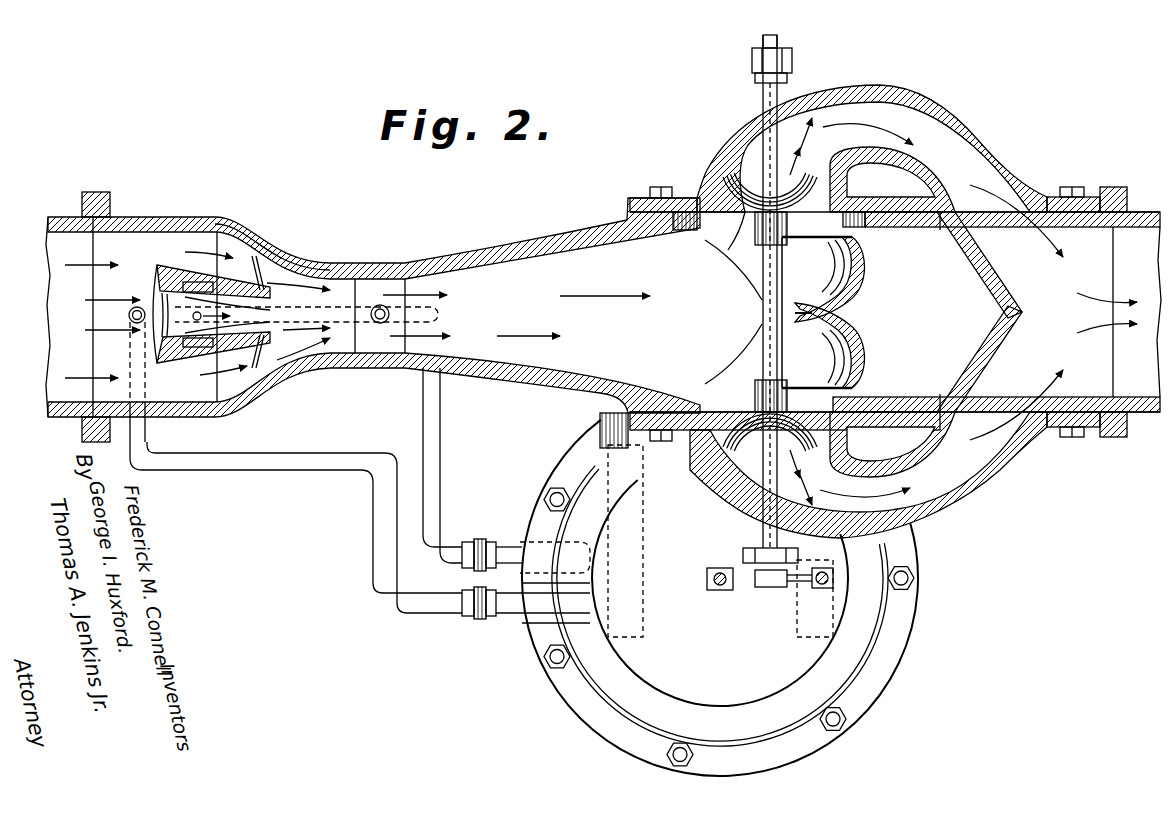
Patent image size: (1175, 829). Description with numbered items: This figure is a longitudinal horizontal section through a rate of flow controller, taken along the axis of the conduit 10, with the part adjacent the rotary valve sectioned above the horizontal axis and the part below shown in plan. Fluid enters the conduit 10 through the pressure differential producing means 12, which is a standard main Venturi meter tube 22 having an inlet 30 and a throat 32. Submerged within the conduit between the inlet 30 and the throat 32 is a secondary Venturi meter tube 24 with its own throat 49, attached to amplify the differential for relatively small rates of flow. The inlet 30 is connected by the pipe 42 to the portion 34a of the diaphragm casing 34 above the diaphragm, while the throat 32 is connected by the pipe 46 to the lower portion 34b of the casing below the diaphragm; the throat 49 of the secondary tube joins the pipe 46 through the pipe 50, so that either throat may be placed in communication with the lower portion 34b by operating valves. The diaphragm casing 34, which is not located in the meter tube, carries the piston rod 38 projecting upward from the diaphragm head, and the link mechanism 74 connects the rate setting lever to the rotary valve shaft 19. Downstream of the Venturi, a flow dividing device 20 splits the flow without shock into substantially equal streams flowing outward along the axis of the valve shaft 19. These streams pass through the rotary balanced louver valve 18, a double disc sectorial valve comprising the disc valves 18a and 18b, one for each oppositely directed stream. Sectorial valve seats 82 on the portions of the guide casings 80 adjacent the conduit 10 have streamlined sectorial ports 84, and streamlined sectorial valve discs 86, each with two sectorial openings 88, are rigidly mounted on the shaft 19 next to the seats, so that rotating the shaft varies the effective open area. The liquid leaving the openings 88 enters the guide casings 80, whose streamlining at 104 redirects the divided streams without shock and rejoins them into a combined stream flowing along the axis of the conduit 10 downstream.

The conduit 10 is at (66, 230).
The pressure differential producing means 12 is at (248, 228).
The main Venturi meter tube 22 is at (300, 266).
The secondary Venturi meter tube 24 is at (176, 264).
The inlet 30 is at (84, 412).
The throat 32 is at (372, 342).
The throat 49 is at (193, 316).
The pipe 50 is at (365, 270).
The pipe 42 is at (226, 466).
The pipe 46 is at (440, 484).
The diaphragm casing 34 is at (640, 668).
The portion of the diaphragm casing above the diaphragm 34a is at (523, 614).
The lower portion of the diaphragm casing 34b is at (522, 538).
The piston rod 38 is at (714, 590).
The link mechanism 74 is at (820, 589).
The rotary valve shaft 19 is at (762, 125).
The sectorial valve seats 82 is at (695, 212).
The sectorial ports 84 is at (715, 163).
The sectorial valve discs 86 is at (690, 232).
The sectorial openings 88 is at (758, 300).
The guide casings 80 is at (940, 102).
The streamlined portion of guide casings 104 is at (838, 150).
The rotary balanced louver valve 18 is at (764, 248).
The rotary balanced sectorial disc valve 18a is at (870, 238).
The rotary balanced sectorial disc valve 18b is at (852, 380).
The flow dividing device 20 is at (812, 314).